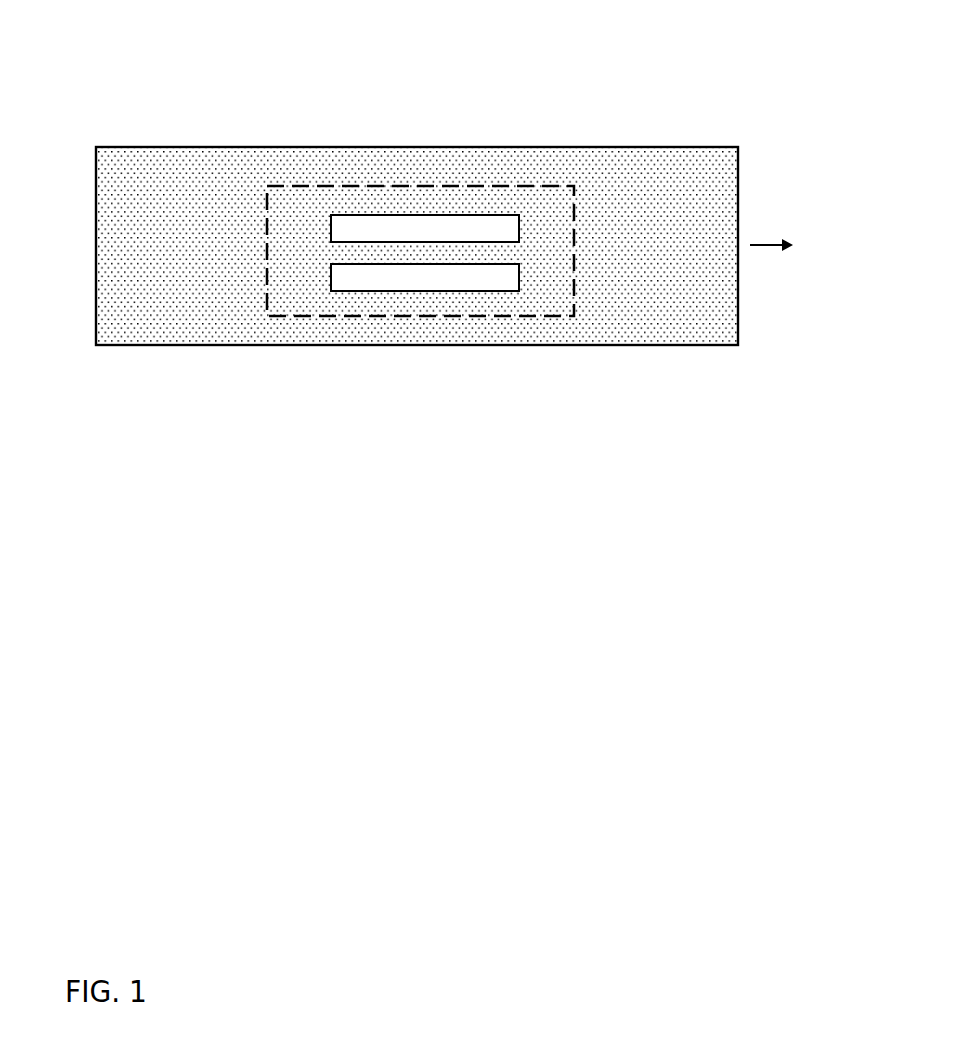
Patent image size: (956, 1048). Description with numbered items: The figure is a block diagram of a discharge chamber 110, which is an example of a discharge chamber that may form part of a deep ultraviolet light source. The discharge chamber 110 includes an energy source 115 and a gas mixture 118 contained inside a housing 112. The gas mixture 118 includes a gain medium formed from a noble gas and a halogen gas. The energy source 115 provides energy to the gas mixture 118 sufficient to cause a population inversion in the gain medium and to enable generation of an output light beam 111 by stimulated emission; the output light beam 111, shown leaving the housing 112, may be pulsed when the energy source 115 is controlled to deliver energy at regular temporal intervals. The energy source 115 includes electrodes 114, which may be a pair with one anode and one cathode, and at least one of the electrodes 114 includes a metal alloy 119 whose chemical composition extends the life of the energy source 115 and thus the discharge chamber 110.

The discharge chamber 110 is at (368, 44).
The output light beam 111 is at (765, 245).
The housing 112 is at (607, 147).
The electrodes 114 is at (518, 216).
The energy source 115 is at (318, 316).
The gas mixture 118 is at (192, 206).
The metal alloy 119 is at (425, 253).